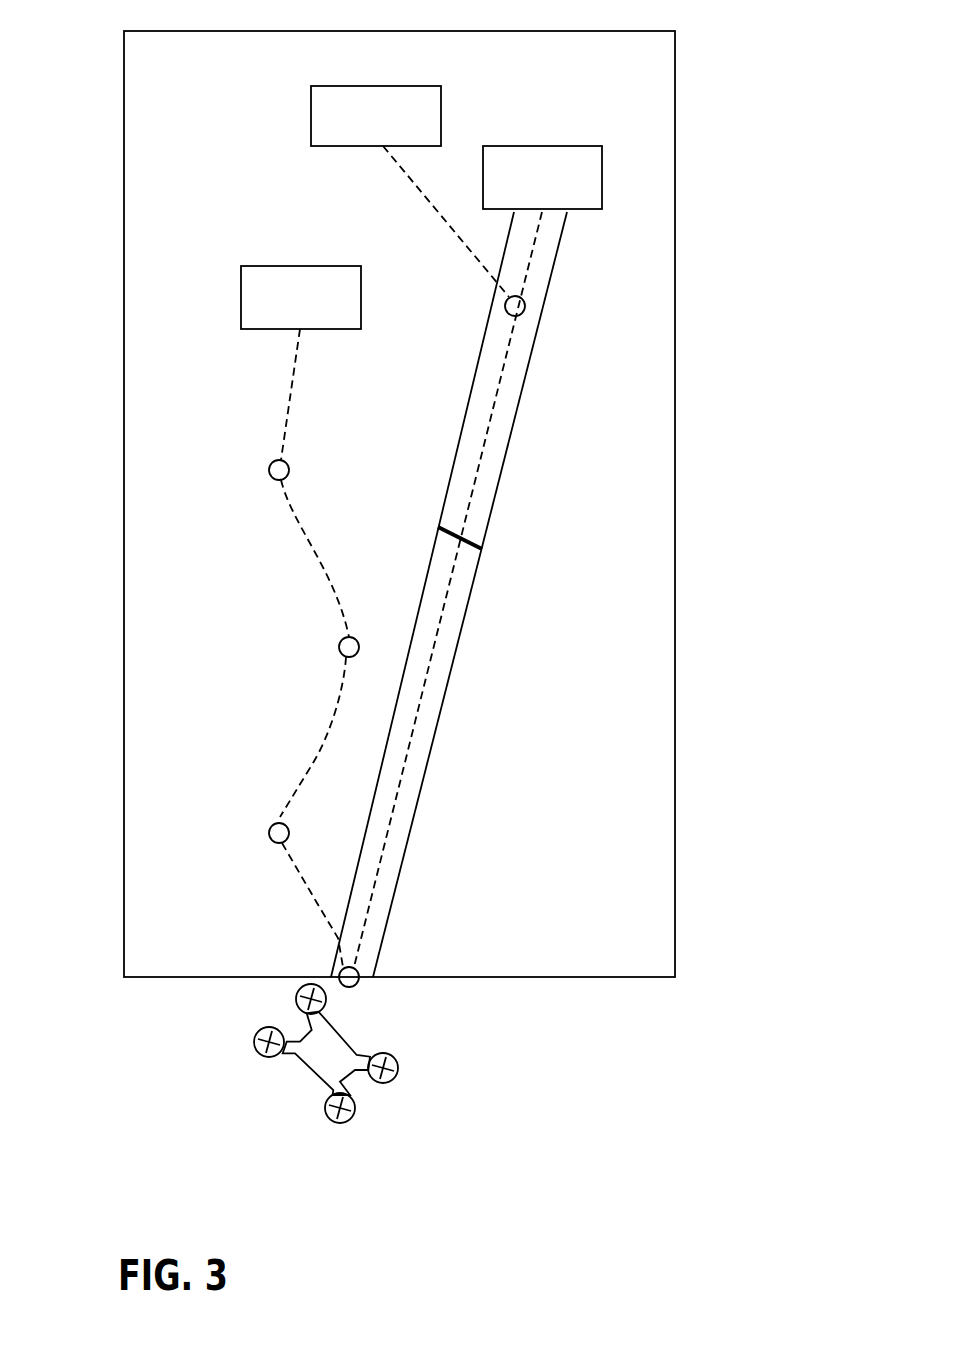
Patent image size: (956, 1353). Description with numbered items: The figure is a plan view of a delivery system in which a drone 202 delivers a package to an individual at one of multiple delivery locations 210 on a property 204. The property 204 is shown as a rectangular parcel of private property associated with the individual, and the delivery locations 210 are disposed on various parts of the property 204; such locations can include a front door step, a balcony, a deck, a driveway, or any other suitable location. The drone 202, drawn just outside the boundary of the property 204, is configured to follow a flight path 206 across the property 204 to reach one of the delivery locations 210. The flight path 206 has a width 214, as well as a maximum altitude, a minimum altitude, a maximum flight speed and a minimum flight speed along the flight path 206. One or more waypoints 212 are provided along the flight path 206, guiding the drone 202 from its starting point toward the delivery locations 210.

The drone 202 is at (294, 1055).
The property 204 is at (131, 575).
The flight path 206 is at (313, 762).
The delivery locations 210 is at (400, 133).
The waypoints 212 is at (506, 309).
The width 214 is at (438, 527).